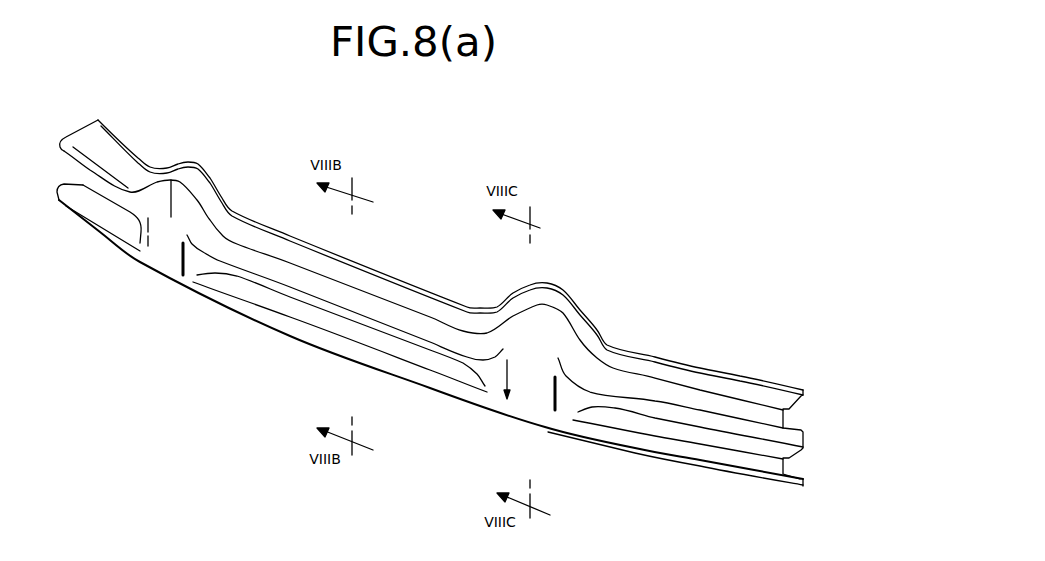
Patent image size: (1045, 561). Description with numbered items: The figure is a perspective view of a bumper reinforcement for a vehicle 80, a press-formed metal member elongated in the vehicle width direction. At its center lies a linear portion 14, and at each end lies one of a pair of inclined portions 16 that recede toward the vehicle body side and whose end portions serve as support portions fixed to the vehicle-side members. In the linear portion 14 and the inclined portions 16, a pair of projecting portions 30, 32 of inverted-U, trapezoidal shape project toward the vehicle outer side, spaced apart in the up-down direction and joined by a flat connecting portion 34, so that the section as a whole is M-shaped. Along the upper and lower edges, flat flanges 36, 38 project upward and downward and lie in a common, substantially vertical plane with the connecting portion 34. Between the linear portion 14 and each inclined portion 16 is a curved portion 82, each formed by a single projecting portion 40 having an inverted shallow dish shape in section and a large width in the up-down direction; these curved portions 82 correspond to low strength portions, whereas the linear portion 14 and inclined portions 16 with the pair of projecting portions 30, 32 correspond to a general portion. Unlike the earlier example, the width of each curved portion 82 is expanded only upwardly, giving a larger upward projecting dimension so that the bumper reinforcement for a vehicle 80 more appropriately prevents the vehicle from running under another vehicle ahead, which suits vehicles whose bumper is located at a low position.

The linear portion 14 is at (373, 250).
The inclined portions 16 is at (143, 136).
The projecting portion 30 is at (71, 143).
The projecting portion 32 is at (80, 213).
The connecting portion 34 is at (388, 332).
The flange 36 is at (263, 223).
The flange 38 is at (637, 453).
The projecting portion 40 is at (173, 180).
The bumper reinforcement for a vehicle 80 is at (195, 437).
The curved portions 82 is at (582, 270).